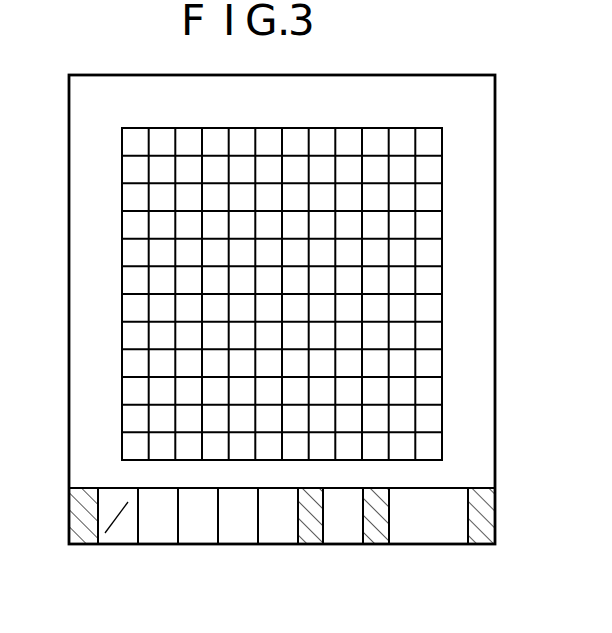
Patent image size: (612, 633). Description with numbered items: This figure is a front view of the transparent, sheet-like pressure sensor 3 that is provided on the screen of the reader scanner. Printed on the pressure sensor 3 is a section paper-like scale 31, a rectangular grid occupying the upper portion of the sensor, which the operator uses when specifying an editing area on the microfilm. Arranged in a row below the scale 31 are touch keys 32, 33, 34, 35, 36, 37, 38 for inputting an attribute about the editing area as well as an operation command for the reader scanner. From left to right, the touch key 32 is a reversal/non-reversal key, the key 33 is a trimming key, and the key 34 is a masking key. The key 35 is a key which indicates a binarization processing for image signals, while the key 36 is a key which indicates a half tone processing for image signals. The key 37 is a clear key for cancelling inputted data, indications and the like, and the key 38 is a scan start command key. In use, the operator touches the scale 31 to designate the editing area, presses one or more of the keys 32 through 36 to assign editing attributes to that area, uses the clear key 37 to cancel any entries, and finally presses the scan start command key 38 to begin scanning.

The pressure sensor 3 is at (495, 248).
The section paper-like scale 31 is at (442, 335).
The reversal/non-reversal key 32 is at (110, 544).
The trimming key 33 is at (157, 544).
The masking key 34 is at (200, 544).
The binarization key 35 is at (243, 544).
The half tone key 36 is at (280, 544).
The clear key 37 is at (343, 544).
The scan start command key 38 is at (425, 544).